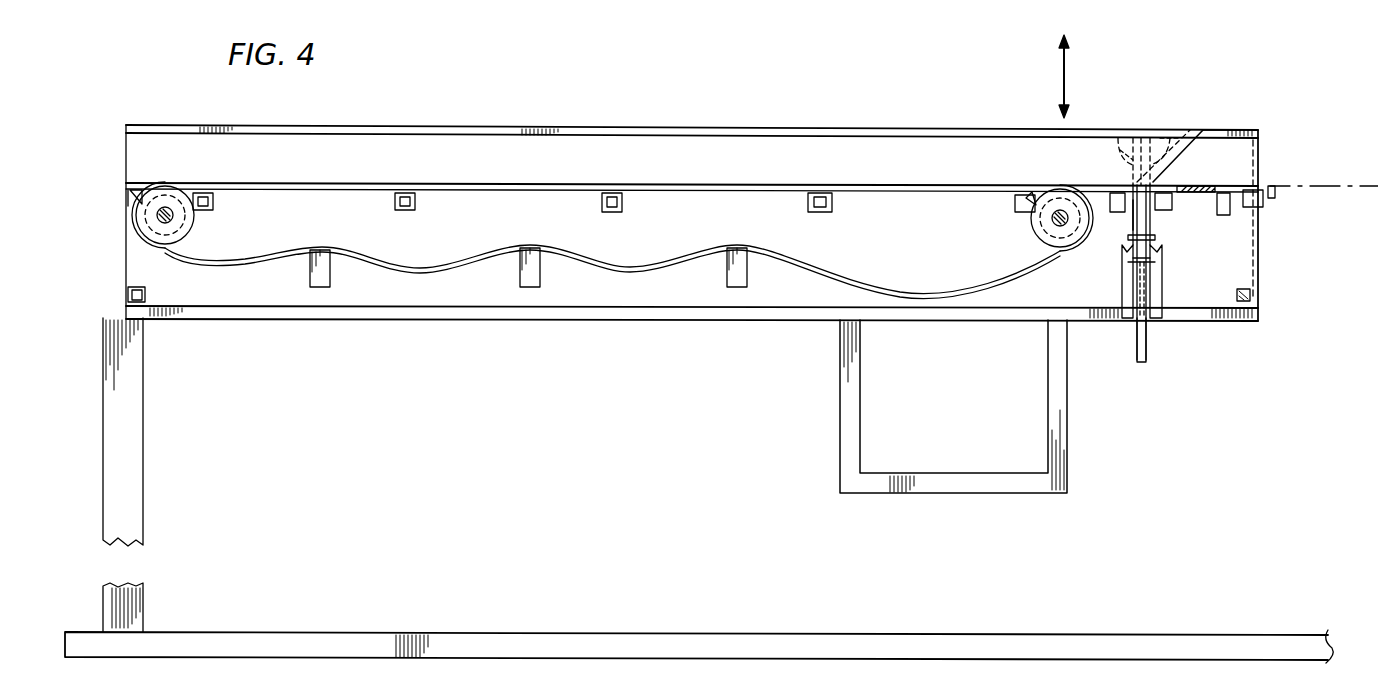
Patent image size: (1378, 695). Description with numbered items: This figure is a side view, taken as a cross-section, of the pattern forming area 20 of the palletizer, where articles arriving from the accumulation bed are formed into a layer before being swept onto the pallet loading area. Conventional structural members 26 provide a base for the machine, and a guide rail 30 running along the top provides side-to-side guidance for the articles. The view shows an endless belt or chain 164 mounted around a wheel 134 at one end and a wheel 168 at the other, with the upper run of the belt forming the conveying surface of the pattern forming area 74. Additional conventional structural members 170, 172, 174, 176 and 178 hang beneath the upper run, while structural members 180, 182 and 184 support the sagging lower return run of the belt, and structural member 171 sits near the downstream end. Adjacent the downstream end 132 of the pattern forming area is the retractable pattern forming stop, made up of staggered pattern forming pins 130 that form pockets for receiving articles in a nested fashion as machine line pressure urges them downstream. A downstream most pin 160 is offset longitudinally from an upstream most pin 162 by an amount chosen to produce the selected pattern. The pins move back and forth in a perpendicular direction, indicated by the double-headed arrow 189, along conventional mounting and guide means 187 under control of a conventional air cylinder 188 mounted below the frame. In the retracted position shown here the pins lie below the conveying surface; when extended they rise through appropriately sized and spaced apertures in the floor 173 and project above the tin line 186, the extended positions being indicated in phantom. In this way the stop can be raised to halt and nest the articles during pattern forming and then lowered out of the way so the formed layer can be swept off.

The pattern forming area 20 is at (1340, 150).
The structural members 26 is at (125, 424).
The guide rail 30 is at (676, 152).
The pattern forming area 74 is at (783, 183).
The pattern forming pins 130 is at (1118, 136).
The downstream end 132 is at (1132, 117).
The wheel 134 is at (130, 213).
The downstream most pin 160 is at (1177, 156).
The upstream most pin 162 is at (1133, 220).
The endless belt or chain 164 is at (700, 250).
The wheel 168 is at (1042, 230).
The structural member 170 is at (215, 200).
The structural member 171 is at (1237, 293).
The structural member 172 is at (395, 203).
The floor 173 is at (1210, 135).
The structural member 174 is at (602, 200).
The structural member 176 is at (810, 203).
The structural member 178 is at (1015, 205).
The structural member 180 is at (320, 268).
The structural member 182 is at (530, 265).
The structural member 184 is at (735, 265).
The tin line 186 is at (1040, 185).
The mounting and guide means 187 is at (1122, 290).
The air cylinder 188 is at (1160, 295).
The double-headed arrow 189 is at (1064, 78).